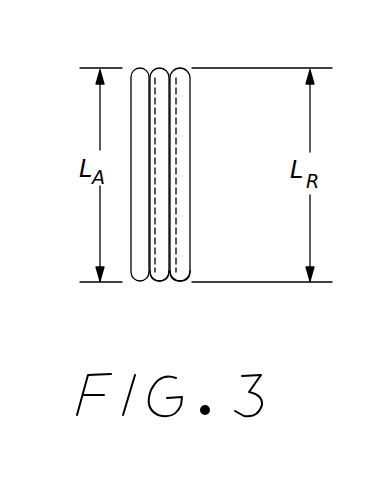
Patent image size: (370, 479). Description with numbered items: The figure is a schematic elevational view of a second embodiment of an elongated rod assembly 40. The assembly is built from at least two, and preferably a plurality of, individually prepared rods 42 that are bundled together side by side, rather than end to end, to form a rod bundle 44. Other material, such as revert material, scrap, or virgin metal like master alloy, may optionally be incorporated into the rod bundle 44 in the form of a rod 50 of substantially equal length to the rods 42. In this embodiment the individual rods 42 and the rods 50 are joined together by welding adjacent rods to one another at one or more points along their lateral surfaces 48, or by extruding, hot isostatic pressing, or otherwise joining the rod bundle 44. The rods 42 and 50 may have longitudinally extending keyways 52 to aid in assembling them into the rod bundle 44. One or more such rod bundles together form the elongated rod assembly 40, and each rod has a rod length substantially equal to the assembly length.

The elongated rod assembly 40 is at (125, 55).
The rod 42 is at (138, 157).
The rod bundle 44 is at (170, 291).
The lateral surface 48 is at (150, 223).
The rod 50 is at (162, 283).
The keyway 52 is at (152, 115).